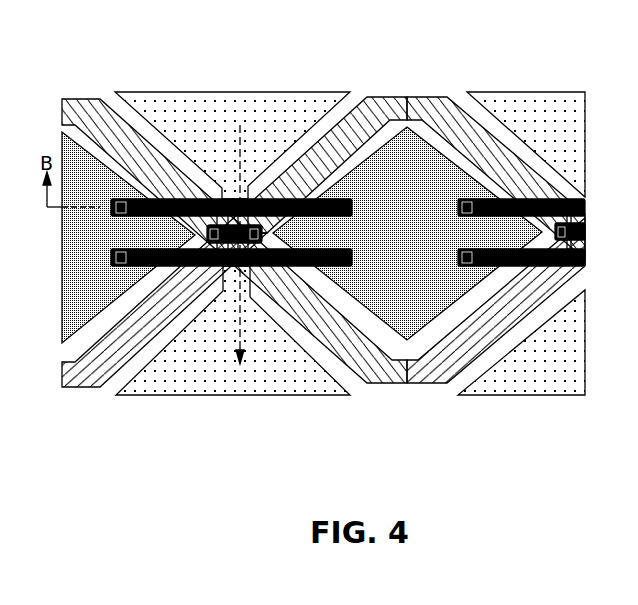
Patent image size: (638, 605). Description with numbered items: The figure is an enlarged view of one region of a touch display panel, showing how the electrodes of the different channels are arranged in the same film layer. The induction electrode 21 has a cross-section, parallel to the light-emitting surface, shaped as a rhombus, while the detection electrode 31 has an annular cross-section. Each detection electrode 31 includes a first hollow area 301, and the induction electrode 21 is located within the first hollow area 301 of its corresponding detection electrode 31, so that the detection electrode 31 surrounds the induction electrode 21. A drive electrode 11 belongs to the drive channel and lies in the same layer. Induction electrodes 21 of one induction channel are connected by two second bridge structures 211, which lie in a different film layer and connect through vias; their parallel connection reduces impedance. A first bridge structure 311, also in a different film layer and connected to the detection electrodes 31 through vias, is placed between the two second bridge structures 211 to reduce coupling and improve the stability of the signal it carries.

The drive electrode 11 is at (236, 122).
The induction electrode 21 is at (427, 313).
The detection electrode 31 is at (383, 112).
The first hollow area 301 is at (447, 152).
The second bridge structure 211 is at (316, 208).
The first bridge structure 311 is at (228, 243).